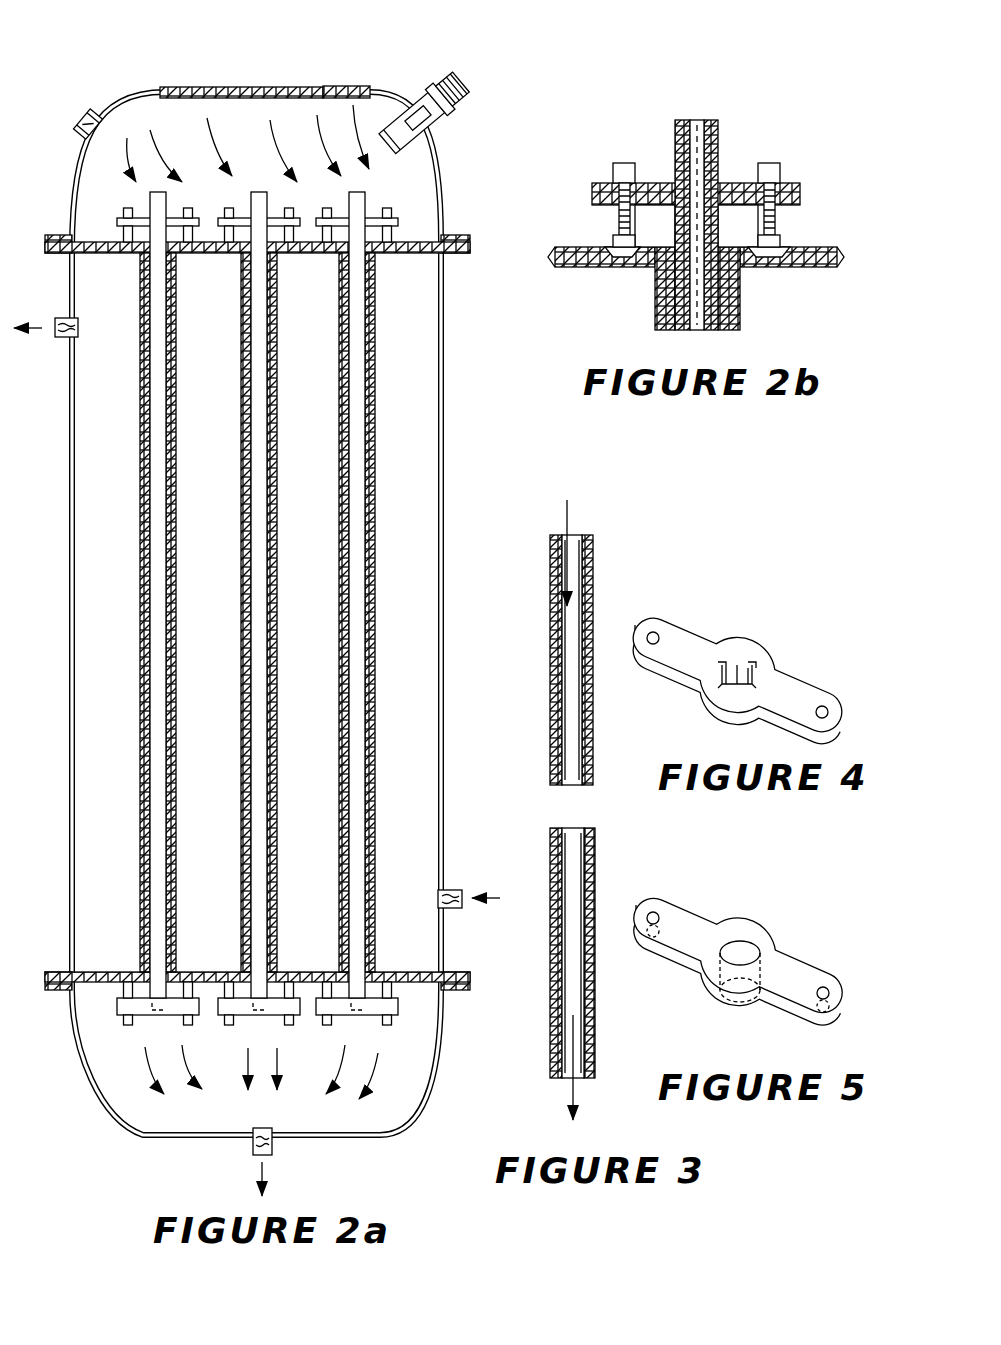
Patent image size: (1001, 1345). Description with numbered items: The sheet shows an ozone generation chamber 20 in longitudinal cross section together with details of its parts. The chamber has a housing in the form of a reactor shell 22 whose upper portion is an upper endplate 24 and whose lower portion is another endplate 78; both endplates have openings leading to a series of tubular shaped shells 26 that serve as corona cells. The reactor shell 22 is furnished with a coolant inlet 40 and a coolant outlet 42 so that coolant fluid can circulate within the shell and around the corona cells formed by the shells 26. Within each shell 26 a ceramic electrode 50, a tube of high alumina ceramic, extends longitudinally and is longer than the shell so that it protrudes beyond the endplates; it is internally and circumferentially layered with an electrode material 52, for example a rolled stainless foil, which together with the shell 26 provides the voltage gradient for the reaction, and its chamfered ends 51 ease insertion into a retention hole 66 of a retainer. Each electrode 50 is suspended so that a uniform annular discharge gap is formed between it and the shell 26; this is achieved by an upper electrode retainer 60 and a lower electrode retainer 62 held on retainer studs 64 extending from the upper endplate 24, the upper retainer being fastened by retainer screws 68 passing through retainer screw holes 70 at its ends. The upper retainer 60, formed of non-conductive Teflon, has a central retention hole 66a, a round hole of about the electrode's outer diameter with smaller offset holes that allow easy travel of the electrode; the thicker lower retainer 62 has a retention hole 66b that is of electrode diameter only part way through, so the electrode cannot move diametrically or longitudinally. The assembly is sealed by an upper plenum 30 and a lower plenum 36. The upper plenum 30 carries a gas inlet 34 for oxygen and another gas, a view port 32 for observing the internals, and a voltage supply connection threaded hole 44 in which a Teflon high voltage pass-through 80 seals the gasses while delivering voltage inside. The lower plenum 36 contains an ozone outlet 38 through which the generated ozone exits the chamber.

In FIG. 2A, the ozone generation chamber 20 is at (473, 413).
In FIG. 2A, the reactor shell 22 is at (445, 585).
In FIG. 2A, the upper endplate 24 is at (92, 240).
In FIG. 2B, the upper endplate 24 is at (625, 265).
In FIG. 2A, the tubular shaped shell 26 is at (240, 572).
In FIG. 2B, the tubular shaped shell 26 is at (740, 315).
In FIG. 2A, the upper plenum 30 is at (143, 90).
In FIG. 2A, the view port 32 is at (262, 88).
In FIG. 2A, the gas inlet 34 is at (90, 120).
In FIG. 2A, the lower plenum 36 is at (82, 1058).
In FIG. 2A, the ozone outlet 38 is at (275, 1140).
In FIG. 2A, the coolant inlet 40 is at (458, 906).
In FIG. 2A, the coolant outlet 42 is at (65, 340).
In FIG. 2A, the voltage supply connection threaded hole 44 is at (450, 132).
In FIG. 2A, the ceramic electrode 50 is at (163, 822).
In FIG. 2B, the ceramic electrode 50 is at (720, 130).
In FIG. 3, the ceramic electrode 50 is at (554, 870).
In FIG. 3, the chamfered end 51 is at (593, 537).
In FIG. 2A, the electrode material 52 is at (160, 682).
In FIG. 2B, the electrode material 52 is at (694, 120).
In FIG. 3, the electrode material 52 is at (566, 830).
In FIG. 2A, the upper electrode retainer 60 is at (380, 222).
In FIG. 2B, the upper electrode retainer 60 is at (656, 182).
In FIG. 4, the upper electrode retainer 60 is at (692, 655).
In FIG. 2A, the lower electrode retainer 62 is at (392, 1003).
In FIG. 5, the lower electrode retainer 62 is at (692, 935).
In FIG. 2A, the retainer stud 64 is at (377, 242).
In FIG. 2B, the retainer stud 64 is at (620, 243).
In FIG. 2B, the retention hole 66 is at (728, 195).
In FIG. 4, the retention hole 66a is at (738, 660).
In FIG. 5, the retention hole 66b is at (740, 941).
In FIG. 2B, the retainer screw 68 is at (612, 167).
In FIG. 2B, the retainer screw hole 70 is at (778, 197).
In FIG. 4, the retainer screw hole 70 is at (653, 632).
In FIG. 5, the retainer screw hole 70 is at (653, 912).
In FIG. 2A, the upper endplate 78 is at (115, 972).
In FIG. 2A, the high voltage pass-through 80 is at (422, 112).